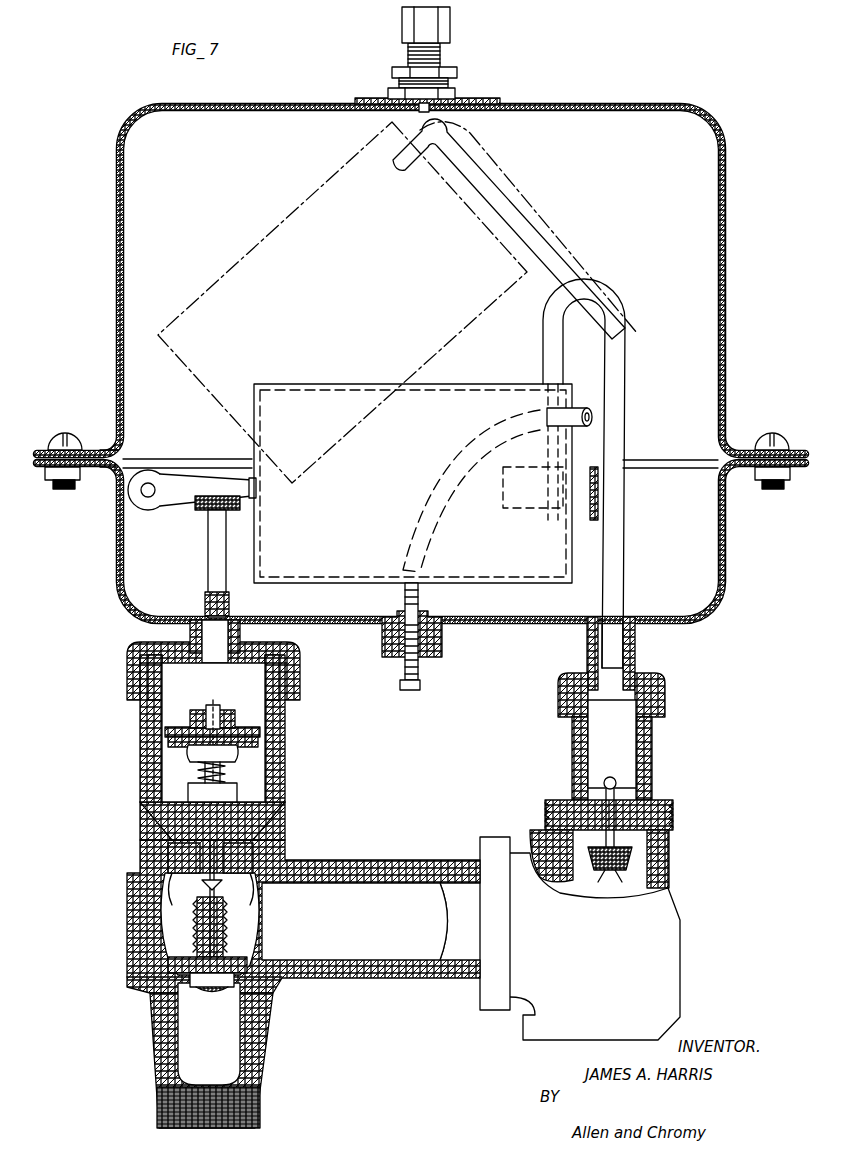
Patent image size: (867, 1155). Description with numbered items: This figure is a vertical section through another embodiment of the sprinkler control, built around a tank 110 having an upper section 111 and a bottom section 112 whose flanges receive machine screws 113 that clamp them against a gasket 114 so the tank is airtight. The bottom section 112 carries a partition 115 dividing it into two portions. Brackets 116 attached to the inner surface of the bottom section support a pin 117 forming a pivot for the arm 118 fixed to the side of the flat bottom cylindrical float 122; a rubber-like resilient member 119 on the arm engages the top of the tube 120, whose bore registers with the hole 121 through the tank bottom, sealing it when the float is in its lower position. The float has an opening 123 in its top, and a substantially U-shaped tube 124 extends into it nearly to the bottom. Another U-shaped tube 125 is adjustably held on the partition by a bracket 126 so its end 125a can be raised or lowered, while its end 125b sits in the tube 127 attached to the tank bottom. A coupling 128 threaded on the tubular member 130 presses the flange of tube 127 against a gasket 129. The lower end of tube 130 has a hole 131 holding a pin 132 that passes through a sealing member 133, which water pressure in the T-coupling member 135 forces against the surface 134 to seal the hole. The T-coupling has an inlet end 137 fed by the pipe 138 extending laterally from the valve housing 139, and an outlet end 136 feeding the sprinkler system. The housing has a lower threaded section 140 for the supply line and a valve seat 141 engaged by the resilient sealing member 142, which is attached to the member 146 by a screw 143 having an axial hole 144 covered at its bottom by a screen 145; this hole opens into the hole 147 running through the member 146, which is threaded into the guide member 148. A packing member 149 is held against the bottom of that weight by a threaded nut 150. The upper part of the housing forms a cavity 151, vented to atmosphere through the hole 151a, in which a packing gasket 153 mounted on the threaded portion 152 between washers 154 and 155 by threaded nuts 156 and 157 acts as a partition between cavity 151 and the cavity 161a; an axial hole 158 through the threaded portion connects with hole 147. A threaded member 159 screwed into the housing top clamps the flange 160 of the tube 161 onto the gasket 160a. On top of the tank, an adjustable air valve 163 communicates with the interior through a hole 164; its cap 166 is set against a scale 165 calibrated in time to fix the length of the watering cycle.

The tank 110 is at (421, 363).
The upper section 111 is at (116, 284).
The bottom section 112 is at (118, 566).
The machine screws 113 is at (58, 438).
The gasket 114 is at (103, 448).
The partition 115 is at (586, 600).
The brackets 116 is at (133, 470).
The pin 117 is at (150, 500).
The arm 118 is at (222, 490).
The resilient member 119 is at (206, 508).
The tube 120 is at (210, 566).
The hole 121 is at (208, 601).
The float 122 is at (256, 246).
The opening 123 is at (527, 386).
The tube 124 is at (538, 215).
The U-shaped tube 125 is at (607, 320).
The end of tube 125 125a is at (558, 510).
The end of tube 125 125b is at (610, 657).
The bracket 126 is at (593, 478).
The tube 127 is at (632, 624).
The coupling 128 is at (642, 684).
The gasket 129 is at (598, 724).
The tubular member 130 is at (650, 745).
The hole 131 is at (666, 820).
The pin 132 is at (616, 788).
The sealing member 133 is at (633, 858).
The surface 134 is at (665, 845).
The member 135 is at (670, 895).
The outlet end 136 is at (556, 1034).
The inlet end 137 is at (490, 855).
The pipe 138 is at (358, 876).
The valve housing 139 is at (136, 915).
The lower threaded section 140 is at (158, 1122).
The valve seat 141 is at (150, 990).
The sealing member 142 is at (170, 965).
The screw 143 is at (160, 998).
The axial hole 144 is at (233, 986).
The screen 145 is at (205, 995).
The member 146 is at (190, 945).
The hole 147 is at (178, 845).
The guide member 148 is at (170, 823).
The packing member 149 is at (172, 858).
The threaded nut 150 is at (170, 876).
The cavity 151 is at (172, 784).
The hole 151a is at (166, 800).
The threaded portion 152 is at (200, 770).
The packing gasket 153 is at (166, 726).
The washer 154 is at (256, 742).
The washer 155 is at (258, 731).
The threaded nut 156 is at (225, 718).
The threaded nut 157 is at (244, 765).
The axial hole 158 is at (213, 706).
The threaded member 159 is at (285, 688).
The flange 160 is at (292, 660).
The gasket 160a is at (140, 676).
The tube 161 is at (238, 640).
The cavity 161a is at (180, 672).
The air valve 163 is at (445, 53).
The hole 164 is at (420, 112).
The scale 165 is at (480, 98).
The cap 166 is at (404, 28).